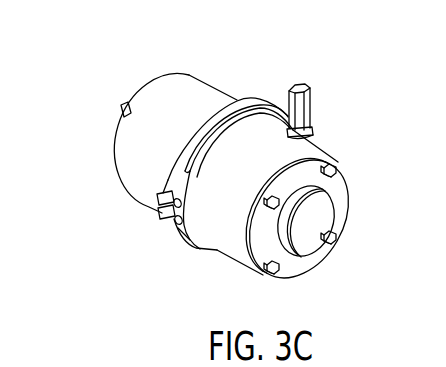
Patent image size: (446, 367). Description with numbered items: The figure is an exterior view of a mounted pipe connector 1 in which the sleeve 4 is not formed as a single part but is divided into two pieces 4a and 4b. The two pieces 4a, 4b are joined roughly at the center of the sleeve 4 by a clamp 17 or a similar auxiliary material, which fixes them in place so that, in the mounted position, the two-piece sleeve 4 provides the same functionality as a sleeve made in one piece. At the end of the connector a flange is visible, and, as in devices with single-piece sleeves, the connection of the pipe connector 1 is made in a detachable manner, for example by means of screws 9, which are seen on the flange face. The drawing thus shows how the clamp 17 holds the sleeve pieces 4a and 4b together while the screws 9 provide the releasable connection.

The pipe connector 1 is at (78, 72).
The sleeve 4 is at (182, 92).
The sleeve piece 4a is at (133, 158).
The sleeve piece 4b is at (218, 225).
The screws 9 is at (341, 163).
The clamp 17 is at (294, 82).